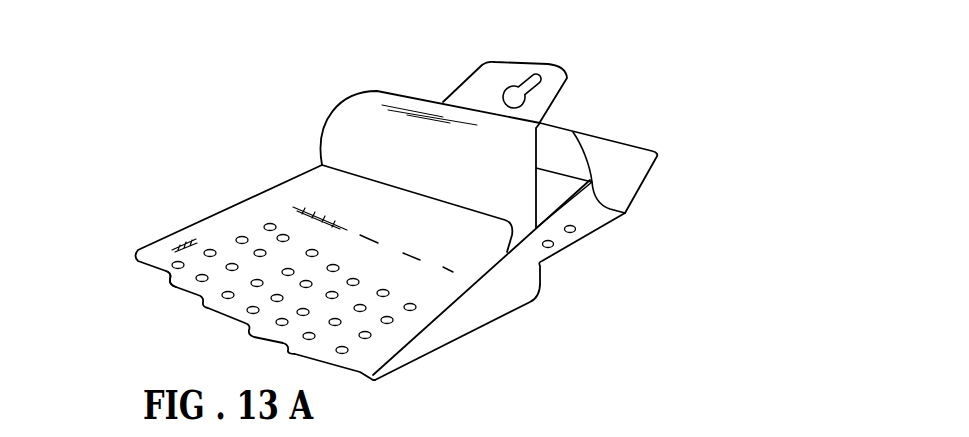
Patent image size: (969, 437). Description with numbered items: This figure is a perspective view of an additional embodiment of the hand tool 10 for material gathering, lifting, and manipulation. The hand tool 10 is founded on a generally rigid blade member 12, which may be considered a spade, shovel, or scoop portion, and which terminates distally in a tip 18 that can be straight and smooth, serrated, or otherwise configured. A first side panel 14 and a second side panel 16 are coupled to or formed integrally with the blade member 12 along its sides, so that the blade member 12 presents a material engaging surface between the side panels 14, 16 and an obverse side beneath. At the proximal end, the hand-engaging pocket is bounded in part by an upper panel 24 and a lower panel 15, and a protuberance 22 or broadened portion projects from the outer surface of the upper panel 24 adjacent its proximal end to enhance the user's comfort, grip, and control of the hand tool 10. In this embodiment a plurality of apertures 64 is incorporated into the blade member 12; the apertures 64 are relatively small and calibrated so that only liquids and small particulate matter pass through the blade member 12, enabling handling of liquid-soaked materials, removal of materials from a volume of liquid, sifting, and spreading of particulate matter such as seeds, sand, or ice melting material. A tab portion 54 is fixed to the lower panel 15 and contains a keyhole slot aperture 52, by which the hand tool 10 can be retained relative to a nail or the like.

The hand tool 10 is at (346, 72).
The blade member 12 is at (232, 308).
The first side panel 14 is at (458, 322).
The lower panel 15 is at (617, 138).
The second side panel 16 is at (186, 243).
The tip 18 is at (175, 285).
The protuberance 22 is at (328, 122).
The upper panel 24 is at (403, 222).
The keyhole slot aperture 52 is at (522, 92).
The tab portion 54 is at (568, 80).
The apertures 64 is at (209, 249).